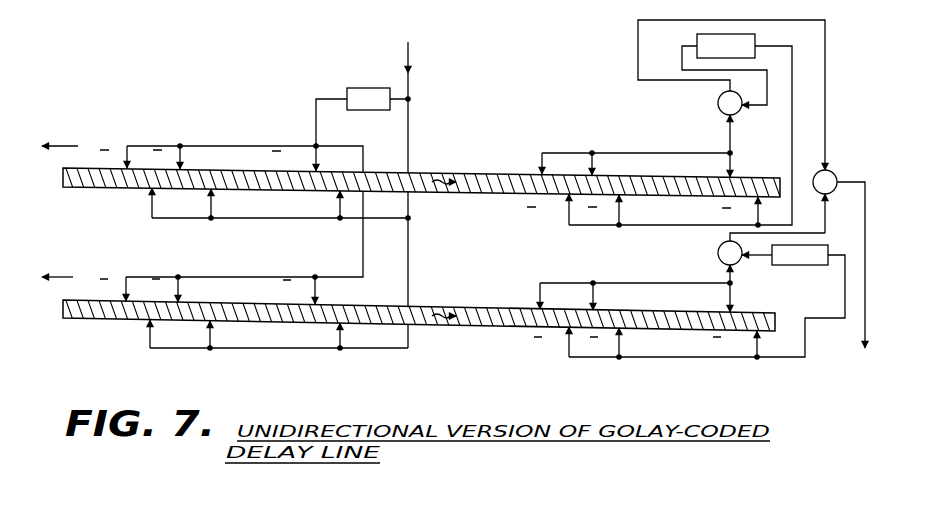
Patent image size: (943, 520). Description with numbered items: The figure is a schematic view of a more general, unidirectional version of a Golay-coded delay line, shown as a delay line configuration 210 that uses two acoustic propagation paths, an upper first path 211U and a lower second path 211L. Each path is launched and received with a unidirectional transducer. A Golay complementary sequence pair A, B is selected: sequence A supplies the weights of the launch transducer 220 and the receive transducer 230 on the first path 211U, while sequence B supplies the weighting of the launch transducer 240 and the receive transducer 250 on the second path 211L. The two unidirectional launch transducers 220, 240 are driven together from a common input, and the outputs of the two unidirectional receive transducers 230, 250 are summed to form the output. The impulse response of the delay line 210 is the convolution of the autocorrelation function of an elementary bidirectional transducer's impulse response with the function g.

The delay line configuration 210 is at (555, 107).
The first acoustic propagation path 211U is at (450, 192).
The second acoustic propagation path 211L is at (450, 320).
The launch transducer 220 is at (220, 106).
The receive transducer 230 is at (565, 133).
The launch transducer 240 is at (248, 264).
The receive transducer 250 is at (697, 268).